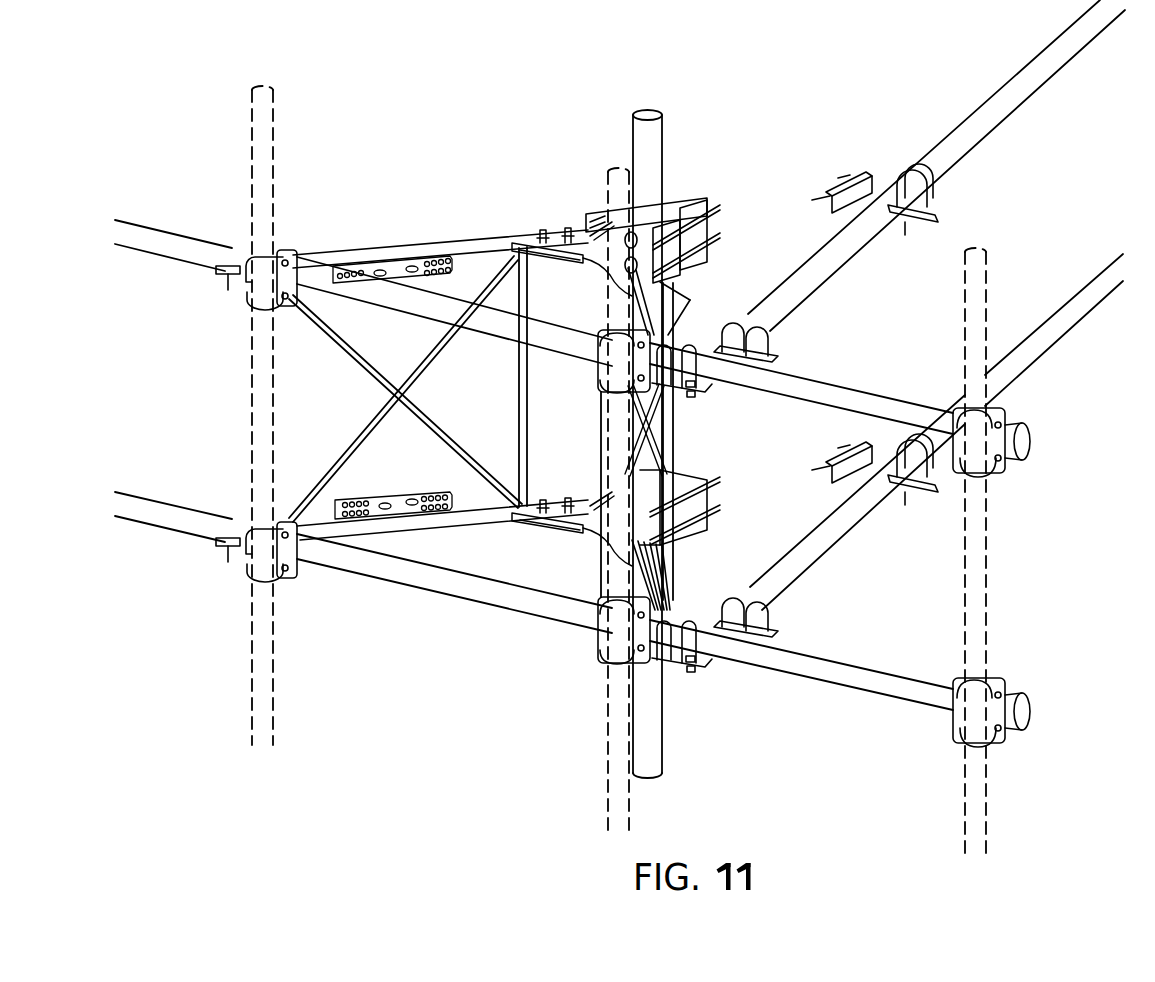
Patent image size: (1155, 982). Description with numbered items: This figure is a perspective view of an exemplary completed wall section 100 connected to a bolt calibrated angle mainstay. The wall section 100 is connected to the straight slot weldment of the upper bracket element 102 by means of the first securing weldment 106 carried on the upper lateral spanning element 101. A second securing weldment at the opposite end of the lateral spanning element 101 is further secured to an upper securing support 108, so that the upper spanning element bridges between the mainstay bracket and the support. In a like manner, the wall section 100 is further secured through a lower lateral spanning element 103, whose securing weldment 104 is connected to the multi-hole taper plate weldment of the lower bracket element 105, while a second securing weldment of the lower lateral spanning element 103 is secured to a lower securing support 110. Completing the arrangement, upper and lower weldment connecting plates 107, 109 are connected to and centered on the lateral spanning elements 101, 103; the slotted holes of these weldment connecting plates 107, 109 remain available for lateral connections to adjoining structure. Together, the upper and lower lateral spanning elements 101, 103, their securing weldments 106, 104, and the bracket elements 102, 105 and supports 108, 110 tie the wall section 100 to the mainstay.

The wall section 100 is at (297, 384).
The lateral spanning element 101 is at (395, 238).
The upper bracket element 102 is at (586, 210).
The lower lateral spanning element 103 is at (380, 530).
The securing weldment 104 is at (537, 533).
The lower bracket element 105 is at (580, 533).
The first securing weldment 106 is at (546, 236).
The upper weldment connecting plate 107 is at (440, 262).
The upper securing support 108 is at (294, 250).
The lower weldment connecting plate 109 is at (425, 520).
The lower securing support 110 is at (293, 578).